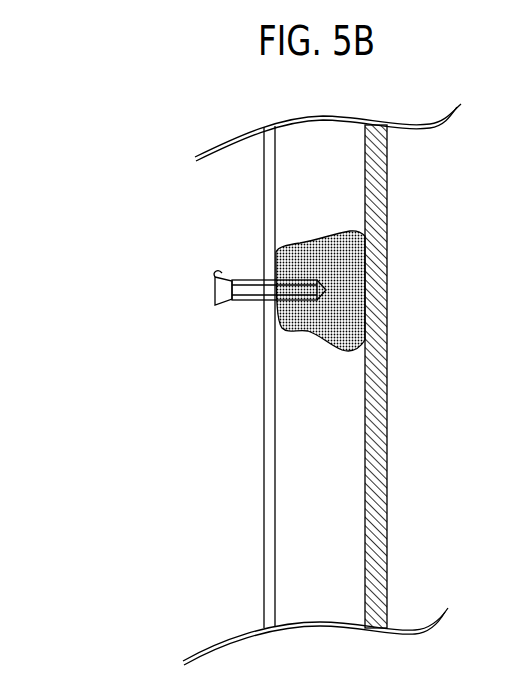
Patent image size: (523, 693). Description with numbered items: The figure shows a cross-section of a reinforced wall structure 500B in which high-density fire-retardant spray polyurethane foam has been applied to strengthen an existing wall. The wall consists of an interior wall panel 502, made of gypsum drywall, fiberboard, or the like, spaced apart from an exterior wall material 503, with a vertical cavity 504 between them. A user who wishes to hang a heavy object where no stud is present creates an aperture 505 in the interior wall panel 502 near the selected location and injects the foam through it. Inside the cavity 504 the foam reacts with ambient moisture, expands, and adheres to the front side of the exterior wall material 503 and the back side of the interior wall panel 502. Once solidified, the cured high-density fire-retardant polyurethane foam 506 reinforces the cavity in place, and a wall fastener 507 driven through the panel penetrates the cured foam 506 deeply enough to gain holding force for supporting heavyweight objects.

The reinforced wall structure 500B is at (116, 182).
The interior wall panel 502 is at (264, 388).
The exterior wall material 503 is at (388, 376).
The vertical cavity 504 is at (332, 512).
The aperture 505 is at (270, 265).
The cured high-density fire-retardant polyurethane foam 506 is at (388, 260).
The wall fastener 507 is at (218, 297).